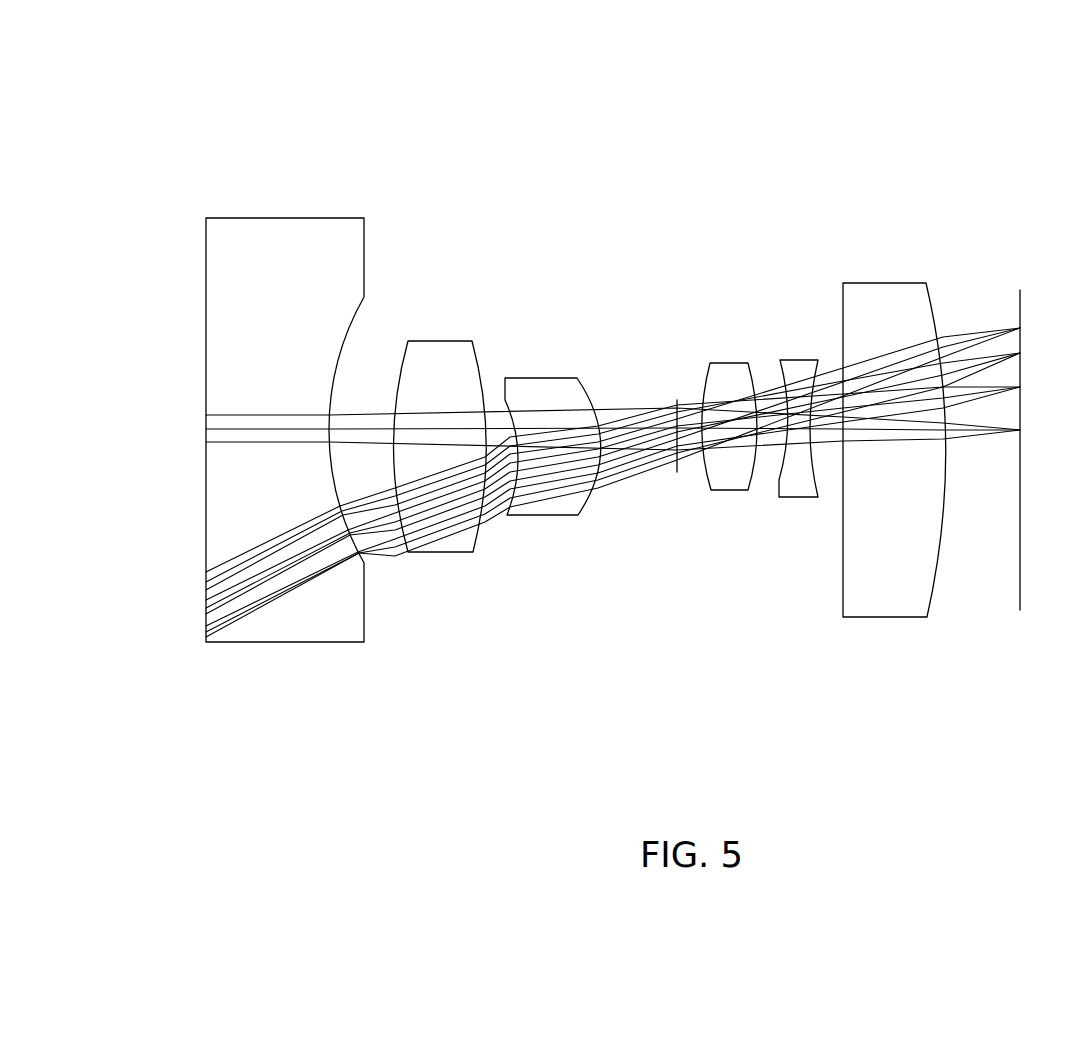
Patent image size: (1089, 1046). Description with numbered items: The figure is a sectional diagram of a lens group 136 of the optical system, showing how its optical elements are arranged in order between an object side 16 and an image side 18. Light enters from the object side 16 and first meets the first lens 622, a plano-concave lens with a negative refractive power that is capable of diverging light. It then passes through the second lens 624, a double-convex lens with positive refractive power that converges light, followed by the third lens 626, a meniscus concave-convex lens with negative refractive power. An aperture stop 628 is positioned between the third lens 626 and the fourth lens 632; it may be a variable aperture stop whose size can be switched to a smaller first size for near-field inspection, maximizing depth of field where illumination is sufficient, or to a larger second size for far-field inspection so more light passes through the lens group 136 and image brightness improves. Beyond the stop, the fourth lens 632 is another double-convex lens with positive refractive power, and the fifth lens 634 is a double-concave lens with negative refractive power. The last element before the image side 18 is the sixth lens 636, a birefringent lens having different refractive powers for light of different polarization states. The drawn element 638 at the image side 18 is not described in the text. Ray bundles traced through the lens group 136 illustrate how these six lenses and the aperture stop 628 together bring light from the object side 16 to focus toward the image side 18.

The object side 16 is at (163, 198).
The image side 18 is at (1058, 258).
The lens group 136 is at (655, 257).
The first lens 622 is at (302, 642).
The second lens 624 is at (453, 543).
The third lens 626 is at (557, 508).
The aperture stop 628 is at (676, 472).
The fourth lens 632 is at (725, 475).
The fifth lens 634 is at (795, 488).
The sixth lens 636 is at (888, 610).
The image plane 638 is at (1020, 602).